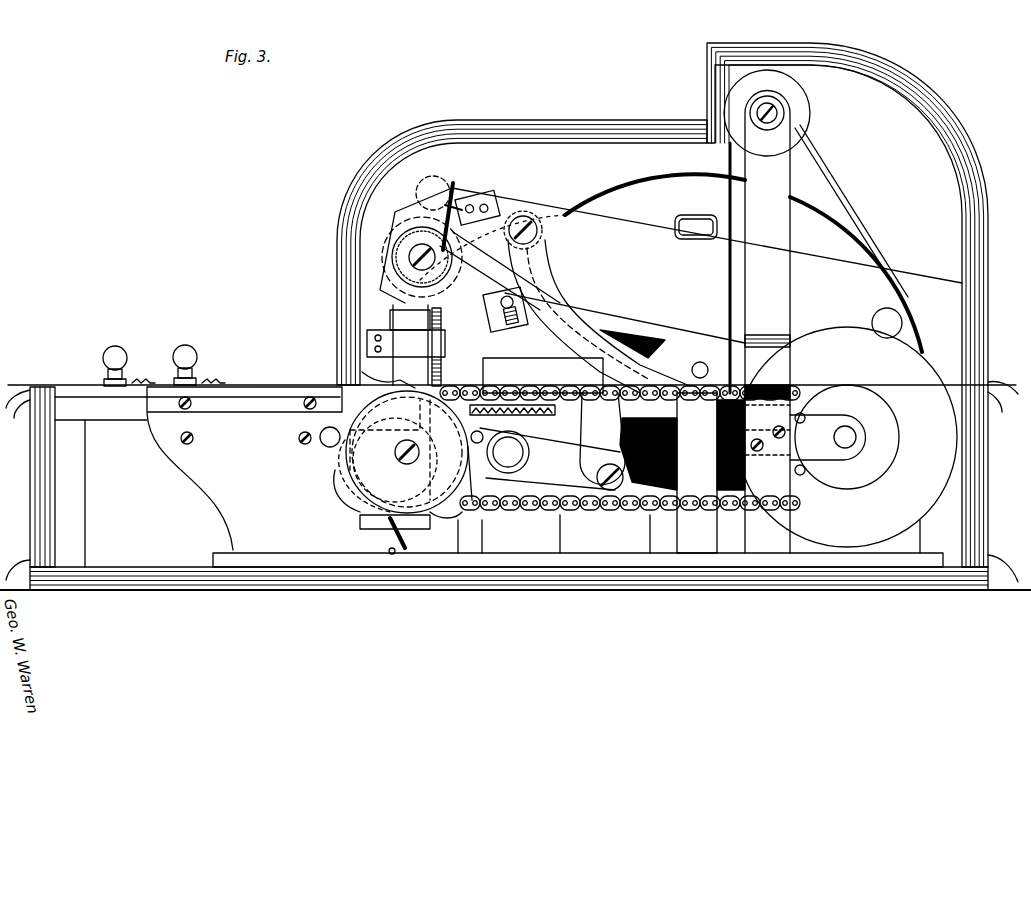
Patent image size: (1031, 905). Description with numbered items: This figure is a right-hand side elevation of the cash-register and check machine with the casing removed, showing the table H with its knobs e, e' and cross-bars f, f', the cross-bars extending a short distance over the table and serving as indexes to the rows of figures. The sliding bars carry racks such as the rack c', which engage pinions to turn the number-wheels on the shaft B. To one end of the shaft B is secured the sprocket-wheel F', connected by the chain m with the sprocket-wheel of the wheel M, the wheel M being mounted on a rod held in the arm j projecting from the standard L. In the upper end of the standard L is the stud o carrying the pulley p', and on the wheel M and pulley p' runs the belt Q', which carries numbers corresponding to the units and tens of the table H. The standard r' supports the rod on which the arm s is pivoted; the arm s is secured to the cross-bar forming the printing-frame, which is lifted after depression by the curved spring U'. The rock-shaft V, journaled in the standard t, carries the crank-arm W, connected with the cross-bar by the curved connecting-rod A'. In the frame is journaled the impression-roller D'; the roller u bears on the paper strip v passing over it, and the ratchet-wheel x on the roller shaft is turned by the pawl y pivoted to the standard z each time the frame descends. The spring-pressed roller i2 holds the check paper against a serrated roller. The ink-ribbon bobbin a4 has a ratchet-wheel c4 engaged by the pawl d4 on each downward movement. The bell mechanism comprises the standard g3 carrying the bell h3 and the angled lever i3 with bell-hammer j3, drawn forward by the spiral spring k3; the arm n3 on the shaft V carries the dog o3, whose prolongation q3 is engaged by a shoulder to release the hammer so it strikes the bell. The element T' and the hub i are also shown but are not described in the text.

The table H is at (512, 465).
The knob e is at (115, 366).
The cross-bar f is at (143, 370).
The knob e' is at (336, 279).
The cross-bar f' is at (213, 369).
The pulley p' is at (767, 113).
The stud o is at (770, 120).
The standard L is at (760, 322).
The curved spring U' is at (671, 263).
The belt Q' is at (851, 212).
The arm s is at (671, 273).
The impression-roller D' is at (426, 263).
The roller u is at (438, 178).
The paper strip v is at (521, 184).
The pawl d4 is at (488, 237).
The ratchet-wheel x is at (439, 270).
The pawl y is at (500, 271).
The pivot T' is at (597, 302).
The spring-pressed roller i2 is at (495, 318).
The ink-ribbon bobbin a4 is at (406, 345).
The ratchet-wheel c4 is at (441, 370).
The prolongation q3 is at (388, 372).
The chain m is at (620, 457).
The rack c' is at (520, 410).
The shaft B is at (407, 452).
The sprocket-wheel F' is at (391, 465).
The dog o3 is at (457, 440).
The bell-hammer j3 is at (322, 432).
The bell h3 is at (325, 490).
The arm n3 is at (481, 473).
The rock-shaft V is at (508, 452).
The crank-arm W is at (550, 459).
The curved connecting-rod A' is at (628, 441).
The standard z is at (711, 457).
The spiral spring k3 is at (403, 536).
The standard g3 is at (401, 533).
The angled lever i3 is at (445, 520).
The standard t is at (490, 540).
The wheel M is at (893, 485).
The hub i is at (845, 437).
The arm j is at (801, 444).
The standard r' is at (887, 323).